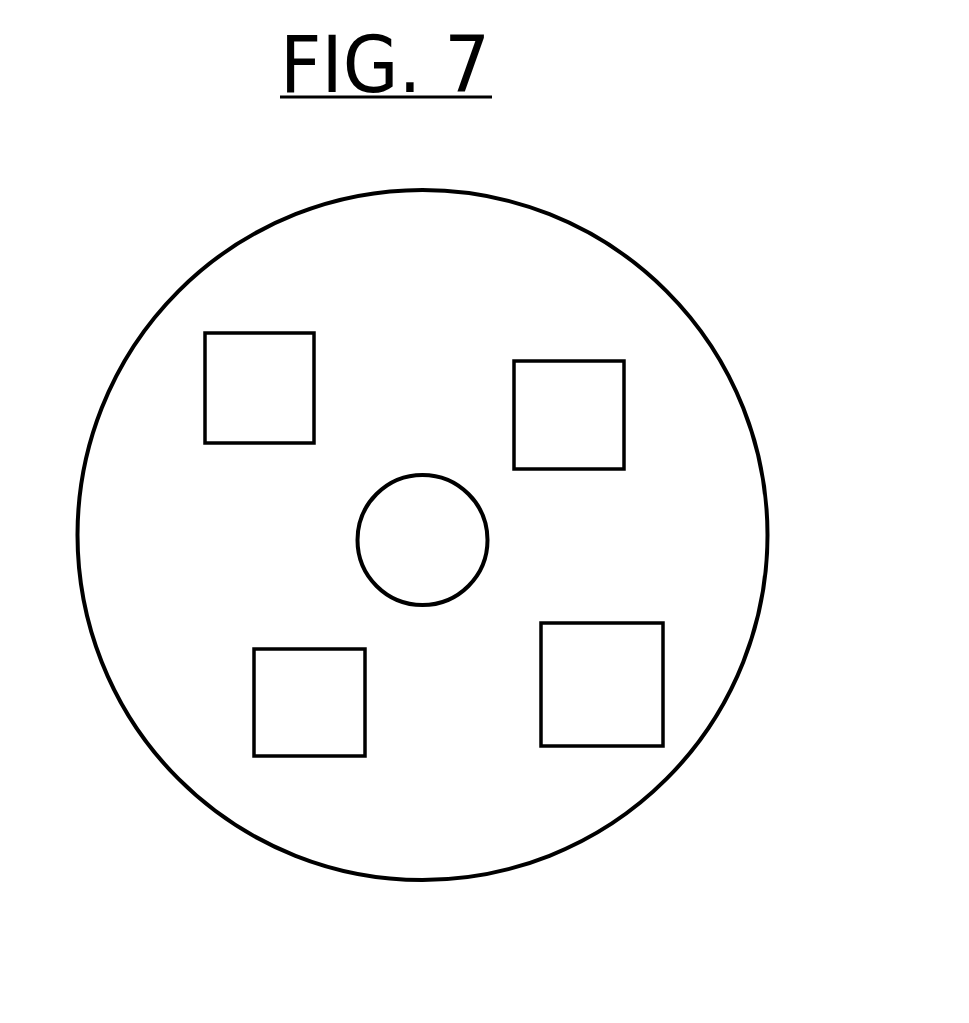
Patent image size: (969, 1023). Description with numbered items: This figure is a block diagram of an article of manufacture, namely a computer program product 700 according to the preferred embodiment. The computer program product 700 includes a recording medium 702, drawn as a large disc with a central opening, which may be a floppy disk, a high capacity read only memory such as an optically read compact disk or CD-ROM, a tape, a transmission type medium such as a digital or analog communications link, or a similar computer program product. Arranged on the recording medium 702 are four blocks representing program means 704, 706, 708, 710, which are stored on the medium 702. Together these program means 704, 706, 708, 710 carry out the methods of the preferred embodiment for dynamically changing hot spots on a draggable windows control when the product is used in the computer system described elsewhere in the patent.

The computer program product 700 is at (717, 308).
The recording medium 702 is at (137, 340).
The program means 704 is at (569, 415).
The program means 706 is at (602, 684).
The program means 708 is at (309, 702).
The program means 710 is at (259, 388).